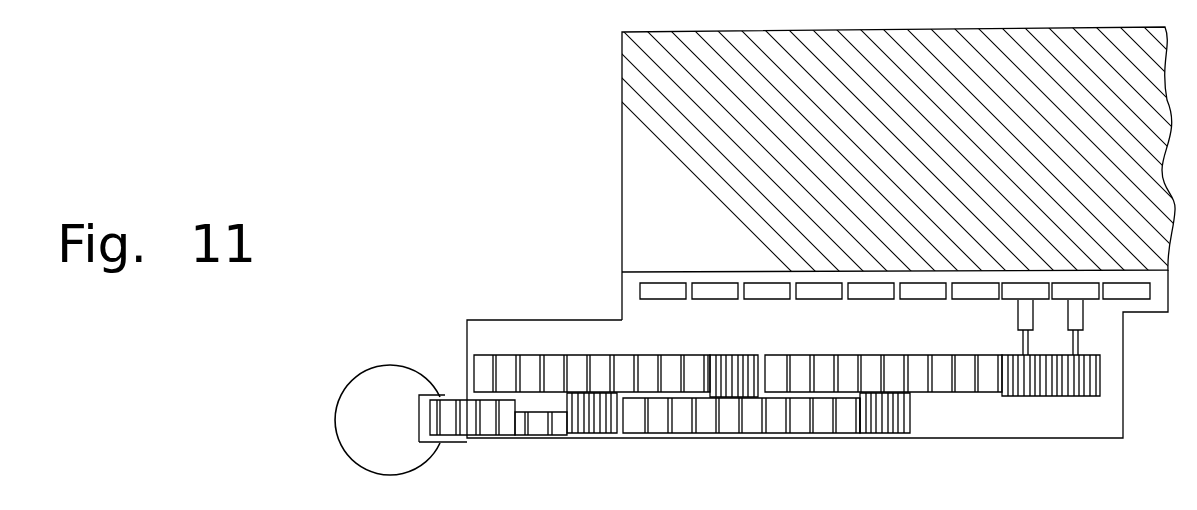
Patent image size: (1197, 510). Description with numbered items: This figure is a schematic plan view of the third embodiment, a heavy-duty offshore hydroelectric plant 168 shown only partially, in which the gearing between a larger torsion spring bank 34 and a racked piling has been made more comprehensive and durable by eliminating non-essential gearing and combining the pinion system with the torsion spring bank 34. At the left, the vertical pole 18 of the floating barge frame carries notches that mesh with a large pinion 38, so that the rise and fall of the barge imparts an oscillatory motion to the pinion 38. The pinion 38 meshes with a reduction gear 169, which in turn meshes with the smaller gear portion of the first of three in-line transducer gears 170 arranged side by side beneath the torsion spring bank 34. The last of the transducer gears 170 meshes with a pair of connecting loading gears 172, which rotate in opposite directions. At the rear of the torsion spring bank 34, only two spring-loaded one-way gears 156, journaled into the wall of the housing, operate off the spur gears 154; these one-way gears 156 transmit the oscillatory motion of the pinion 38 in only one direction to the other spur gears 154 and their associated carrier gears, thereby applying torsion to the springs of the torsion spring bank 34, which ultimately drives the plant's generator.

The heavy-duty offshore hydroelectric plant 168 is at (368, 147).
The torsion spring bank 34 is at (642, 117).
The pole 18 is at (390, 390).
The pinion 38 is at (458, 417).
The reduction gear 169 is at (548, 423).
The transducer gears 170 is at (603, 373).
The spur gears 154 is at (1130, 291).
The spring-loaded one-way gears 156 is at (1033, 320).
The connecting loading gears 172 is at (1092, 397).